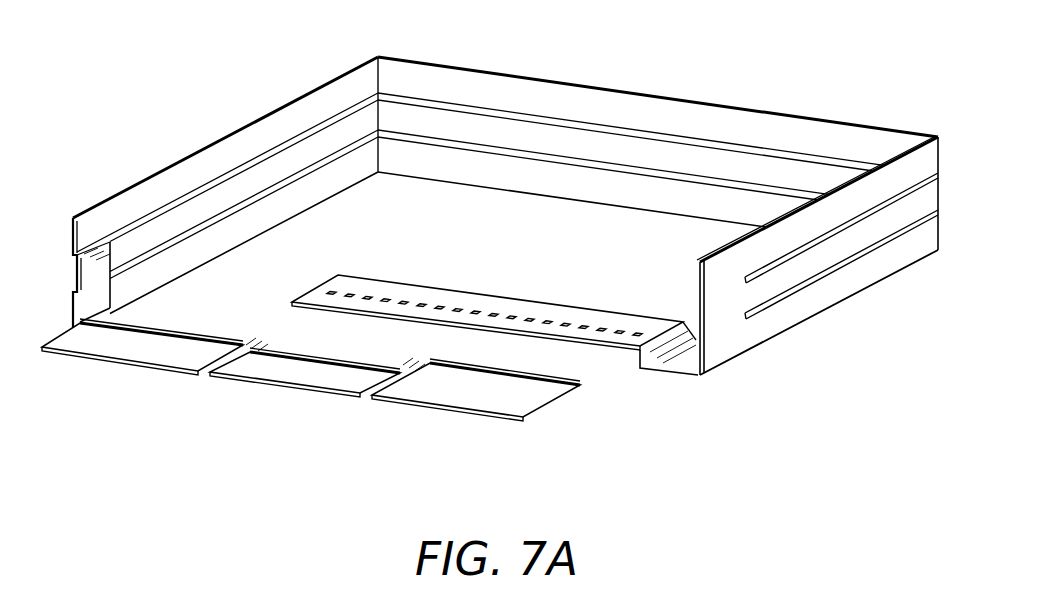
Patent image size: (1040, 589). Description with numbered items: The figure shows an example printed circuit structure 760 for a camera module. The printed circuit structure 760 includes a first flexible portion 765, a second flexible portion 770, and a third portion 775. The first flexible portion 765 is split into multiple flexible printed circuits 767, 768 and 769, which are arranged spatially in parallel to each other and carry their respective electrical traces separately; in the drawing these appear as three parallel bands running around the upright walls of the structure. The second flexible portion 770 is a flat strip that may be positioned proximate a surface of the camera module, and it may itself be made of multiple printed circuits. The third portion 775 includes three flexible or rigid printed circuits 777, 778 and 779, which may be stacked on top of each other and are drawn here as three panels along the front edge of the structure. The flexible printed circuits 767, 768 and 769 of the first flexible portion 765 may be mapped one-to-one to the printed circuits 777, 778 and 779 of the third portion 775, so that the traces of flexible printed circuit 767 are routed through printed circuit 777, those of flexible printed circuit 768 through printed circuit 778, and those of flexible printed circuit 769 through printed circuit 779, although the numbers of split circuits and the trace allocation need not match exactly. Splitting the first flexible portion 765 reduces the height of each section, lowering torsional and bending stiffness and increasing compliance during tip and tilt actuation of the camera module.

The printed circuit structure 760 is at (281, 60).
The first flexible portion 765 is at (673, 75).
The flexible printed circuit 767 is at (524, 180).
The flexible printed circuit 768 is at (539, 145).
The flexible printed circuit 769 is at (554, 110).
The second flexible portion 770 is at (523, 302).
The third portion 775 is at (528, 462).
The printed circuit 777 is at (150, 352).
The printed circuit 778 is at (340, 376).
The printed circuit 779 is at (508, 400).